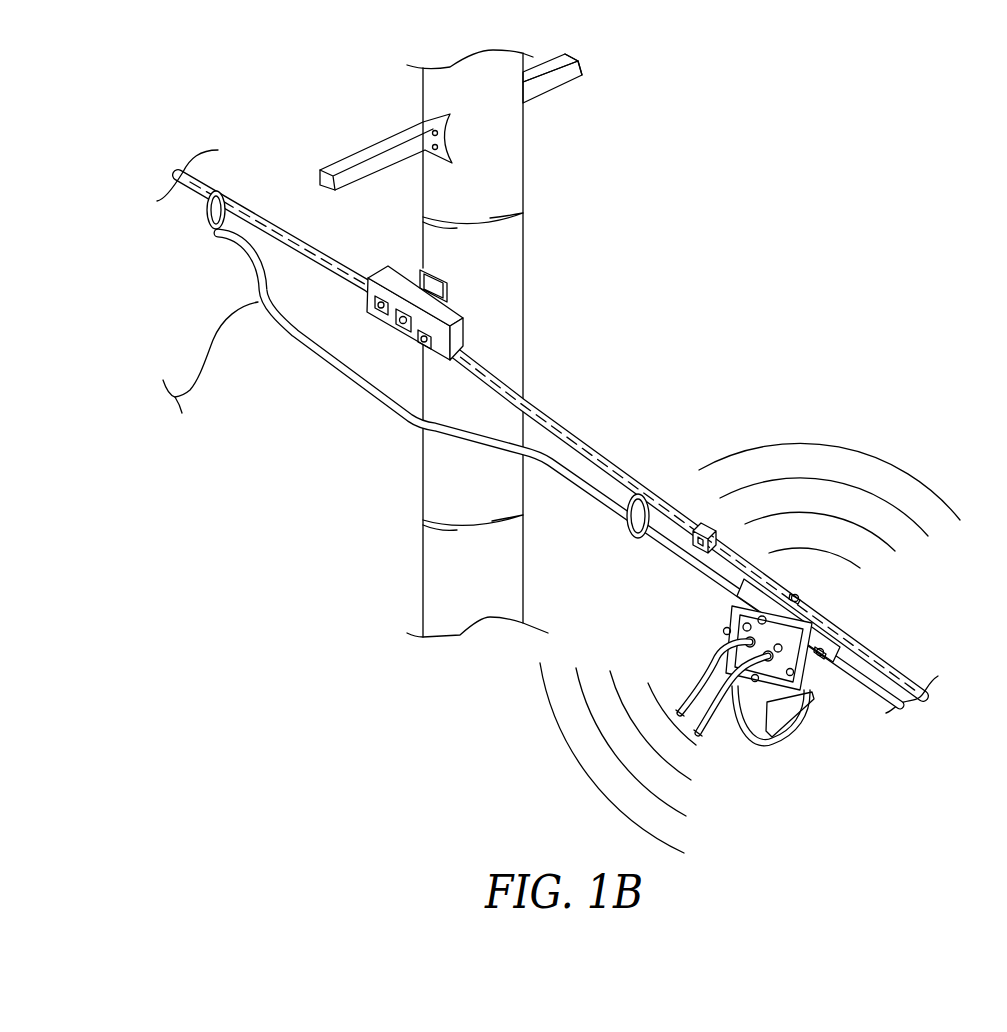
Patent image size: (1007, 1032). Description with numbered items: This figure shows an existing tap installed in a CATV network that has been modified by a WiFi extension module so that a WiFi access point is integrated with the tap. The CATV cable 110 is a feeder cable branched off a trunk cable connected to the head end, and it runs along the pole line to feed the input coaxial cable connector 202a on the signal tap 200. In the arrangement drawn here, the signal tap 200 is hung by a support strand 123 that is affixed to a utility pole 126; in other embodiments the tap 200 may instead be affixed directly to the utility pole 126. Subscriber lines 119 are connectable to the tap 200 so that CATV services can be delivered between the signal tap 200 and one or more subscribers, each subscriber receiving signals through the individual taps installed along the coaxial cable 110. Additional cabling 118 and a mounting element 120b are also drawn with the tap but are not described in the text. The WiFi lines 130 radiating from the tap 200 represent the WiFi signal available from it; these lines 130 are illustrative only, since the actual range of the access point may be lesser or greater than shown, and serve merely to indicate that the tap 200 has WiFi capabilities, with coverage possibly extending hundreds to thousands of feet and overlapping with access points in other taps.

The CATV cable 110 is at (210, 352).
The power cable 118 is at (695, 703).
The subscriber lines 119 is at (718, 727).
The mounting strap 120b is at (826, 693).
The support strand 123 is at (574, 435).
The utility pole 126 is at (523, 346).
The WiFi lines 130 is at (541, 694).
The signal tap 200 is at (805, 608).
The input coaxial cable connector 202a is at (757, 592).